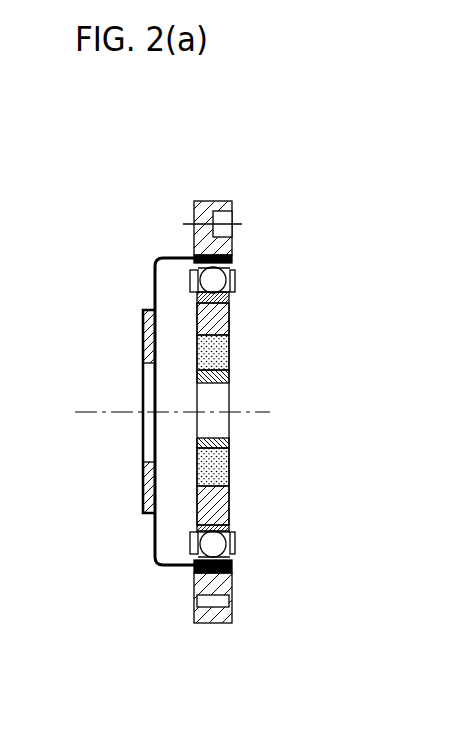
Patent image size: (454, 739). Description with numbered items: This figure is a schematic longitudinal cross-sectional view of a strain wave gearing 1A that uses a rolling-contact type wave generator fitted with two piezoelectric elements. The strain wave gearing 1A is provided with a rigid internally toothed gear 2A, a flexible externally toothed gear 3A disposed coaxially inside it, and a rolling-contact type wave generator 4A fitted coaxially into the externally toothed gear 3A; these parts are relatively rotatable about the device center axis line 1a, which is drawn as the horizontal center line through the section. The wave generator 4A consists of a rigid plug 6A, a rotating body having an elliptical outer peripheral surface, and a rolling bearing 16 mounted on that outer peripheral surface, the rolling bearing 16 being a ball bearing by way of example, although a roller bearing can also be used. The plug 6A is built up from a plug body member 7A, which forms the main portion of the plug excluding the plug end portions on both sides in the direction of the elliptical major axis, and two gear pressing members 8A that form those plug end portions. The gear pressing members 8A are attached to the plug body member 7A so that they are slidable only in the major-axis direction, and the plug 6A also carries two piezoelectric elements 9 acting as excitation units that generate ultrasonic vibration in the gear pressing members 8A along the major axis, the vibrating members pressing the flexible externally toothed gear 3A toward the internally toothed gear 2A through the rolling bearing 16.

The strain wave gearing 1A is at (295, 170).
The device center axis line 1a is at (90, 411).
The rigid internally toothed gear 2A is at (236, 232).
The flexible externally toothed gear 3A is at (162, 255).
The rolling-contact type wave generator 4A is at (305, 412).
The rigid plug 6A is at (286, 410).
The plug body member 7A is at (233, 378).
The gear pressing member 8A is at (233, 313).
The magnet 9 is at (234, 360).
The rolling bearing 16 is at (238, 280).